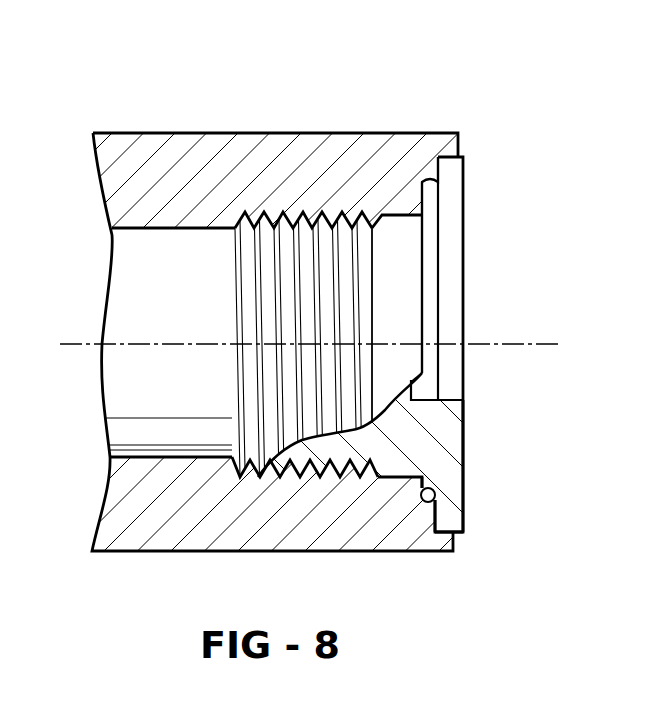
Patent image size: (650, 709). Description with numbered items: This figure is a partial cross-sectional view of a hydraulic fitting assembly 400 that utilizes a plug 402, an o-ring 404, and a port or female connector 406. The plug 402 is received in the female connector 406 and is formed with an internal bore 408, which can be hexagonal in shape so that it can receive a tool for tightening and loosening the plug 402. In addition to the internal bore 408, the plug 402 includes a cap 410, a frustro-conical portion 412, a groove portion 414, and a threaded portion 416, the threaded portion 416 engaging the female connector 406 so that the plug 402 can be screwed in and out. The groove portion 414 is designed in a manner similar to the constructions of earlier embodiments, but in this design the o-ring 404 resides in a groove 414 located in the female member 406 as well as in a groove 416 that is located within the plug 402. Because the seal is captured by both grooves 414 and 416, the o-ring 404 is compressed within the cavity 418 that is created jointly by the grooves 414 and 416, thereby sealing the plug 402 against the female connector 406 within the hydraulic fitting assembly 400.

The hydraulic fitting assembly 400 is at (538, 80).
The plug 402 is at (463, 502).
The o-ring 404 is at (437, 494).
The port or female connector 406 is at (195, 513).
The internal bore 408 is at (463, 284).
The cap 410 is at (465, 193).
The frustro-conical portion 412 is at (392, 476).
The groove portion 414 is at (422, 499).
The threaded portion 416 is at (338, 224).
The cavity 418 is at (423, 490).